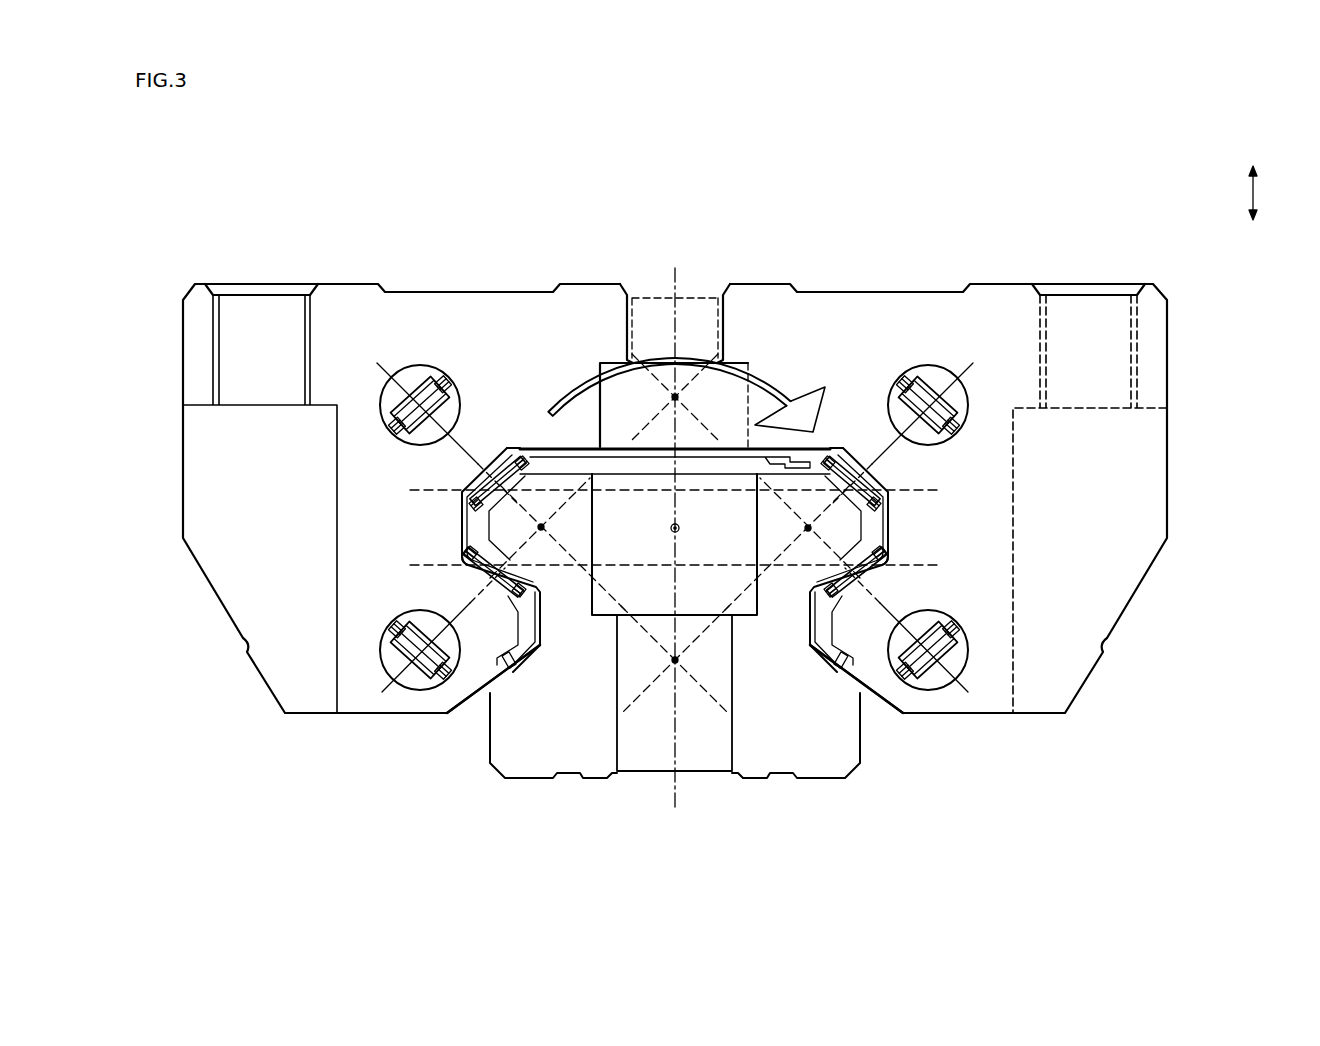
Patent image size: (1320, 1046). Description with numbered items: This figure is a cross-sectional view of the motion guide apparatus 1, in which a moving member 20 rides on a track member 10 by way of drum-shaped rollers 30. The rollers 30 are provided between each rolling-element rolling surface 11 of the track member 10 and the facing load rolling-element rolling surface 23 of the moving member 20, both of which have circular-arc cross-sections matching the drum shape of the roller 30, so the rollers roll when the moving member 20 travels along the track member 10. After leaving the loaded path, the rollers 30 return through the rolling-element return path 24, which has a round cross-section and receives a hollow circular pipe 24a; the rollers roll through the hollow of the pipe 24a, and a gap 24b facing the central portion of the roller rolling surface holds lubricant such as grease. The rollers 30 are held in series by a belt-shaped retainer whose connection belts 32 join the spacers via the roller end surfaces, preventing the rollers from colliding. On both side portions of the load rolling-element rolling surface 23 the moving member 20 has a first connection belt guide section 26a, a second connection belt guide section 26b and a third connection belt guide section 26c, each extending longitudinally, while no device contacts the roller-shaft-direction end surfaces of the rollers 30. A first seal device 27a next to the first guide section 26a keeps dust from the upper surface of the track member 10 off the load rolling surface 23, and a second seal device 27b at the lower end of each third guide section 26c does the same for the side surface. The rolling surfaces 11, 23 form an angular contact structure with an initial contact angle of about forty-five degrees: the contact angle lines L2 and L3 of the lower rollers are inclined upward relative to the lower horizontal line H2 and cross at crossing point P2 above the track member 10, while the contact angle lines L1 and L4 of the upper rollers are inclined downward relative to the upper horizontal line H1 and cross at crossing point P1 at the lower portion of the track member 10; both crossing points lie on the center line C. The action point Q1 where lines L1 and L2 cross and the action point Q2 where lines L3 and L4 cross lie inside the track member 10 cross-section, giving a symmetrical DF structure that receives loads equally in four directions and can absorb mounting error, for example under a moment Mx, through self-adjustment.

The motion guide apparatus 1 is at (1073, 163).
The track member 10 is at (817, 757).
The rolling-element rolling surface 11 is at (519, 452).
The moving member 20 is at (1150, 350).
The load rolling-element rolling surface 23 is at (500, 613).
The rolling-element return path 24 is at (430, 670).
The pipe 24a is at (937, 678).
The gap 24b is at (945, 658).
The first connection belt guide section 26a is at (562, 458).
The second connection belt guide section 26b is at (472, 520).
The third connection belt guide section 26c is at (530, 622).
The first seal device 27a is at (523, 447).
The second seal device 27b is at (515, 663).
The drum-shaped roller 30 is at (857, 460).
The connection belt 32 is at (462, 547).
The center line C is at (675, 268).
The contact angle line L1 is at (978, 360).
The contact angle line L2 is at (960, 697).
The contact angle line L3 is at (382, 692).
The contact angle line L4 is at (378, 363).
The crossing point P1 is at (673, 664).
The crossing point P2 is at (680, 395).
The action point Q1 is at (812, 526).
The action point Q2 is at (543, 530).
The upper horizontal line H1 is at (928, 492).
The lower horizontal line H2 is at (927, 568).
The moment Mx is at (686, 395).